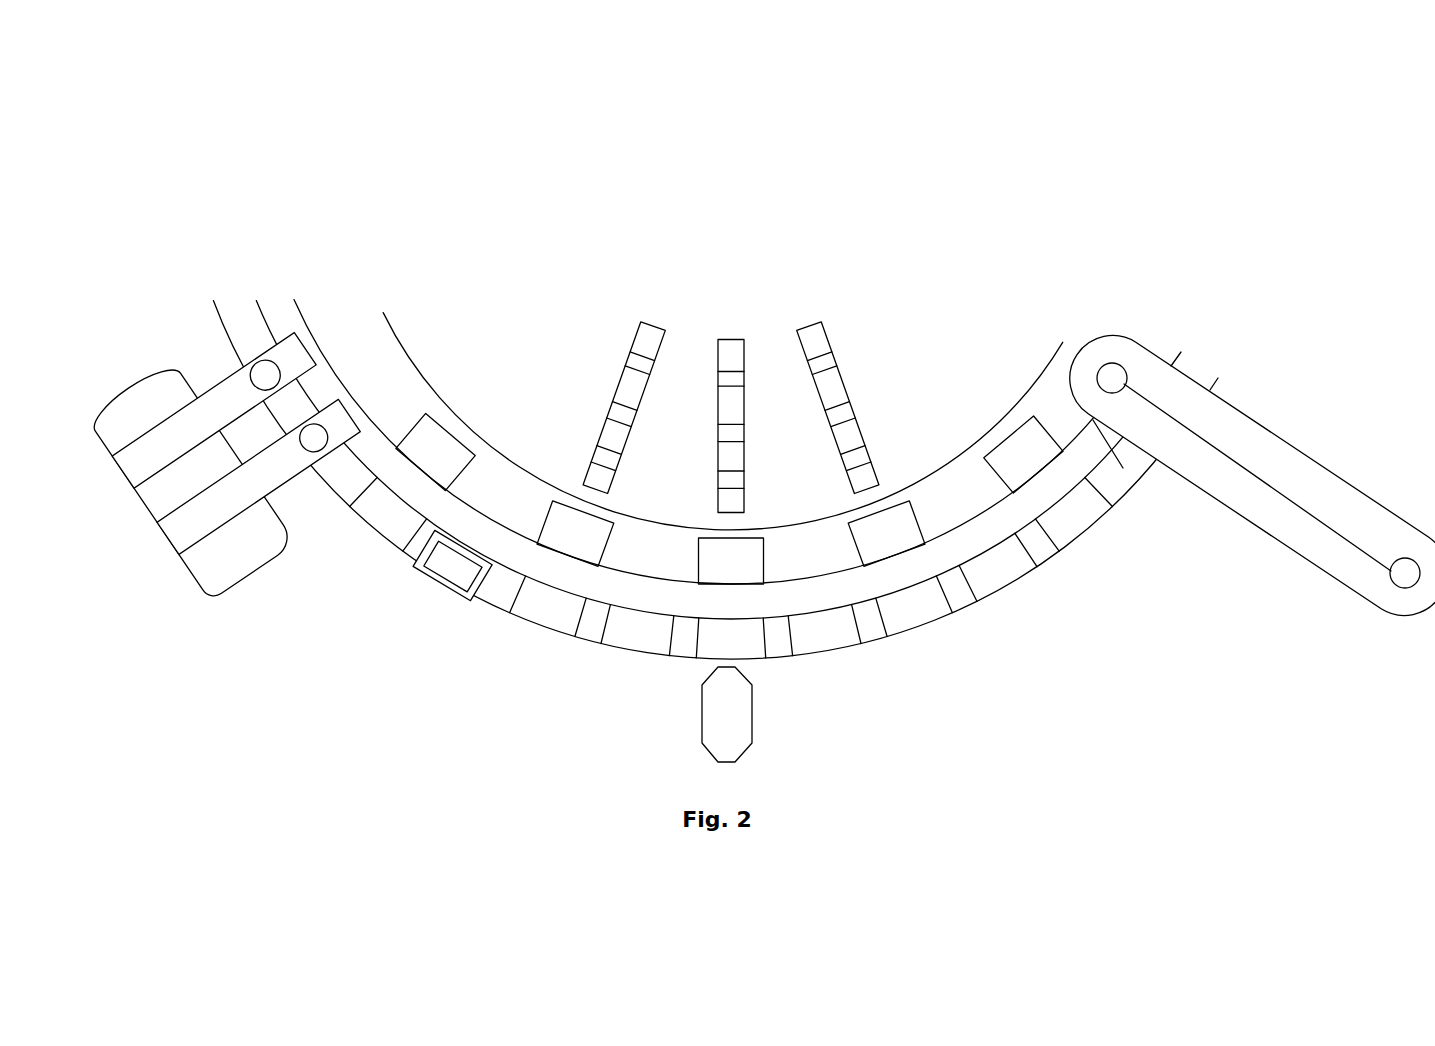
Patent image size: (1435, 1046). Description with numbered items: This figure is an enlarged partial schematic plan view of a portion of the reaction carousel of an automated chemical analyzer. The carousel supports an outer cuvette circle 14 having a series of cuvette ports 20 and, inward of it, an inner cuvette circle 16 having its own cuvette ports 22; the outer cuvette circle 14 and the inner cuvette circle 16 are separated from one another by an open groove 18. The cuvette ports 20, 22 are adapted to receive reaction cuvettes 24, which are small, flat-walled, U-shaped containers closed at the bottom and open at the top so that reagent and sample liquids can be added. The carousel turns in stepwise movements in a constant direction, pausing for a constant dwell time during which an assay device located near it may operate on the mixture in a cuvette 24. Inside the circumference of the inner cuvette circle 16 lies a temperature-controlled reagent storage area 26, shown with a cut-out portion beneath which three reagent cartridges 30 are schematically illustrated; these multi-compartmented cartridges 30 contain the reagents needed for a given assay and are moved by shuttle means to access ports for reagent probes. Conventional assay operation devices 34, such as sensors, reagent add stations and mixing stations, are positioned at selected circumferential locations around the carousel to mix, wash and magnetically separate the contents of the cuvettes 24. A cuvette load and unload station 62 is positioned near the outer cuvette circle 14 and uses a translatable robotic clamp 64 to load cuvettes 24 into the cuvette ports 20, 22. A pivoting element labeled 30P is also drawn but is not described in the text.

The outer cuvette circle 14 is at (1077, 403).
The inner cuvette circle 16 is at (523, 483).
The open groove 18 is at (632, 585).
The cuvette ports 20 is at (1090, 549).
The cuvette ports 22 is at (701, 575).
The reaction cuvettes 24 is at (443, 578).
The reagent storage area 26 is at (770, 137).
The reagent cartridges 30 is at (628, 345).
The pivoting article 30P is at (1112, 380).
The assay operation devices 34 is at (753, 697).
The cuvette load and unload station 62 is at (179, 557).
The translatable robotic clamp 64 is at (303, 449).